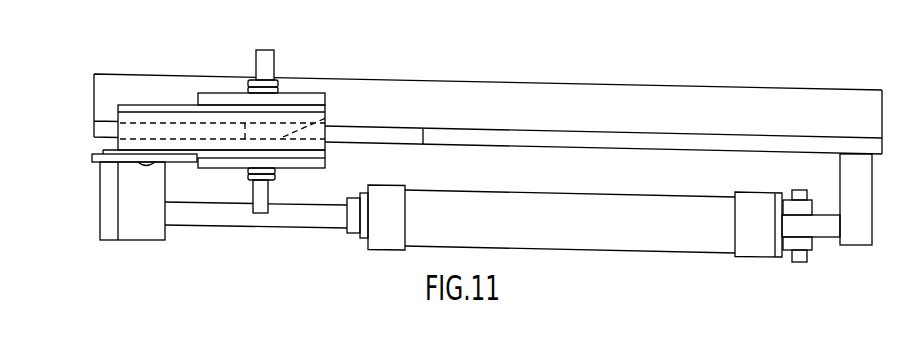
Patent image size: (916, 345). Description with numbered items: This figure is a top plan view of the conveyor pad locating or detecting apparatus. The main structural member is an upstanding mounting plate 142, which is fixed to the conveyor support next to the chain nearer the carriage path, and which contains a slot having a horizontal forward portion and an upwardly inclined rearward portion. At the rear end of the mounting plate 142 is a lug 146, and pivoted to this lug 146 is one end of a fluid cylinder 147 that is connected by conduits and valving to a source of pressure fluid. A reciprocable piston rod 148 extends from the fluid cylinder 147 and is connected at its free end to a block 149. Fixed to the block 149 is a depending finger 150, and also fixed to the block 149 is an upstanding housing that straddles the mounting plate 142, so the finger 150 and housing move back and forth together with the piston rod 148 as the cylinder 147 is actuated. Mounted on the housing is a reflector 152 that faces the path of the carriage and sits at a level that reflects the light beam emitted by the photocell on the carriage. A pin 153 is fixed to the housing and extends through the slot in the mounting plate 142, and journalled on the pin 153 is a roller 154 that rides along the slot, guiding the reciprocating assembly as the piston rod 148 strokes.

The mounting plate 142 is at (611, 143).
The lug 146 is at (847, 172).
The fluid cylinder 147 is at (611, 247).
The piston rod 148 is at (314, 221).
The block 149 is at (148, 231).
The depending finger 150 is at (104, 189).
The reflector 152 is at (178, 164).
The pin 153 is at (268, 192).
The roller 154 is at (328, 117).